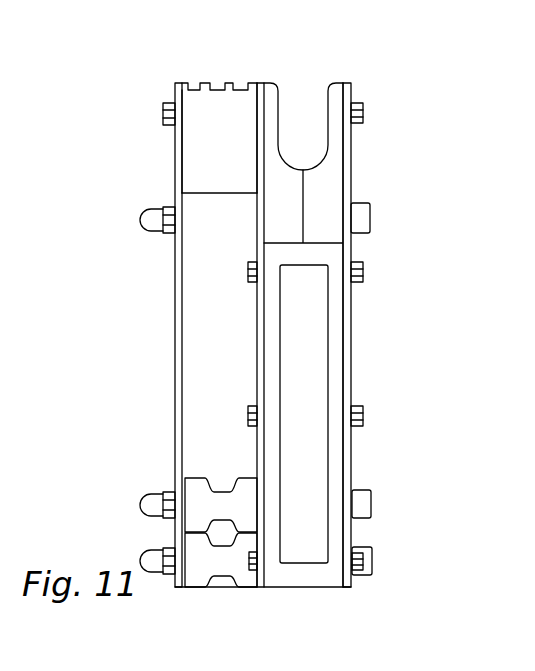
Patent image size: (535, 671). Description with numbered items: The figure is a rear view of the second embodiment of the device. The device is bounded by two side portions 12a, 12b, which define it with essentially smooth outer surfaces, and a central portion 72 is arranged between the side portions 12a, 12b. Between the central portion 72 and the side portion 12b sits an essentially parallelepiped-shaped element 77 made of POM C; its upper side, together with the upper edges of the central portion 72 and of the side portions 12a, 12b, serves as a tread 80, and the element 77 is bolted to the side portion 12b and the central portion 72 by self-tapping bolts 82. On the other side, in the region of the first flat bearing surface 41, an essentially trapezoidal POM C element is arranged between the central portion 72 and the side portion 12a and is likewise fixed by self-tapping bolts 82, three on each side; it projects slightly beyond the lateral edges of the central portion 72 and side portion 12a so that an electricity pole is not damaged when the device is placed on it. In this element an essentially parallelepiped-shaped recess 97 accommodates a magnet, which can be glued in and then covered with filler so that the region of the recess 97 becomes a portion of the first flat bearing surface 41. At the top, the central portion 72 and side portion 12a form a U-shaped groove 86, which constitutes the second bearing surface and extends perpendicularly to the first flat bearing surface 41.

The tread 80 is at (217, 72).
The self-tapping bolts 82 is at (160, 116).
The central portion 72 is at (263, 114).
The U-shaped groove 86 is at (302, 148).
The parallelepiped-shaped element 77 is at (202, 150).
The side portion 12b is at (180, 167).
The side portion 12a is at (348, 175).
The parallelepiped-shaped recess 97 is at (307, 363).
The first flat bearing surface 41 is at (338, 457).